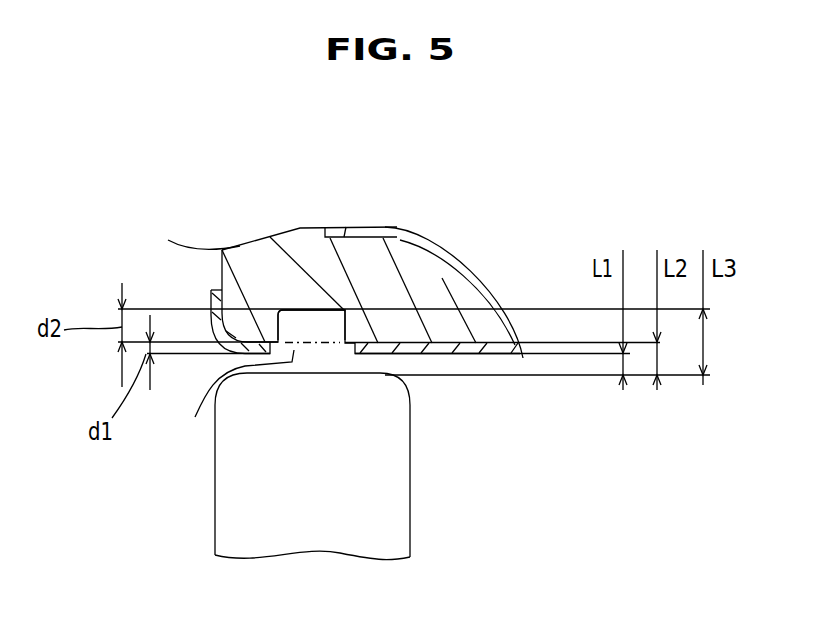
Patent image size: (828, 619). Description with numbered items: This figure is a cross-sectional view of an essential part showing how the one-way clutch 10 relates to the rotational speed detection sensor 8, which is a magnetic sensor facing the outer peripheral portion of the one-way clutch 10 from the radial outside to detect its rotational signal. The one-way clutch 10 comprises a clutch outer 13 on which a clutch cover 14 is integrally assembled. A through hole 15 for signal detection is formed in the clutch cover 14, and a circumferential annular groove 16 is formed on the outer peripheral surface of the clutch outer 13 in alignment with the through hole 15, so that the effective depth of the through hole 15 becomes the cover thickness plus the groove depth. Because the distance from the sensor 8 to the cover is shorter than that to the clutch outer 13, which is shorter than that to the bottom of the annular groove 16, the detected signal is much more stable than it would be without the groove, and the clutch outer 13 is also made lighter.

The rotational speed detection sensor 8 is at (383, 500).
The one-way clutch 10 is at (286, 206).
The clutch outer 13 is at (393, 260).
The clutch cover 14 is at (210, 292).
The through hole 15 is at (256, 398).
The annular groove 16 is at (297, 316).